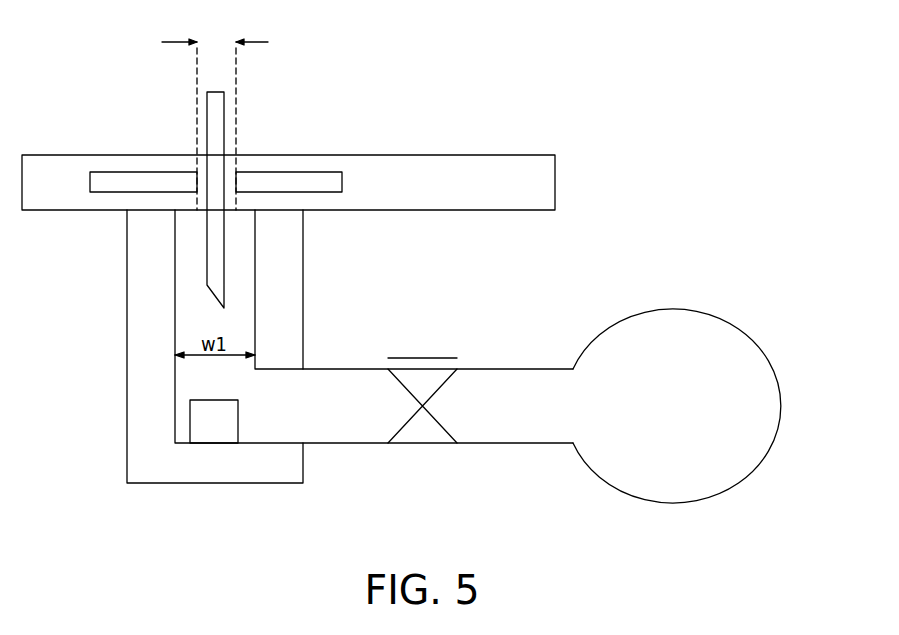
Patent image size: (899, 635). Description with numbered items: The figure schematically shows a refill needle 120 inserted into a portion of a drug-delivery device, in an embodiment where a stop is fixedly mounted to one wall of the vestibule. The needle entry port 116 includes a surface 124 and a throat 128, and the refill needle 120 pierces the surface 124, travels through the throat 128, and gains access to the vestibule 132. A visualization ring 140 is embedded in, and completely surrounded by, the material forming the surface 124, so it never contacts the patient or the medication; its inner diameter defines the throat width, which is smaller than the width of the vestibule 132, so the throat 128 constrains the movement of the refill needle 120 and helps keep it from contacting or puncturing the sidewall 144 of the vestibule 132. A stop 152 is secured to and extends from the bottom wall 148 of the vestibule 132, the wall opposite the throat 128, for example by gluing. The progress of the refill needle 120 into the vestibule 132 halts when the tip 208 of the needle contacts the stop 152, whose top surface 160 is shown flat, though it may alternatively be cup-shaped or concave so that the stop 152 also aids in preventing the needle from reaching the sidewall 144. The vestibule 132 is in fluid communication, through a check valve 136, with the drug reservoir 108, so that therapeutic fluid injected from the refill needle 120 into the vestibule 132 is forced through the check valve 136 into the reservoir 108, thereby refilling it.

The drug reservoir 108 is at (692, 425).
The needle entry port 116 is at (237, 153).
The refill needle 120 is at (210, 122).
The surface 124 is at (540, 182).
The throat 128 is at (200, 212).
The vestibule 132 is at (187, 266).
The check valve 136 is at (424, 446).
The visualization ring 140 is at (133, 178).
The sidewall 144 is at (142, 326).
The bottom wall 148 is at (217, 445).
The stop 152 is at (190, 422).
The top surface 160 is at (208, 400).
The tip 208 is at (218, 300).